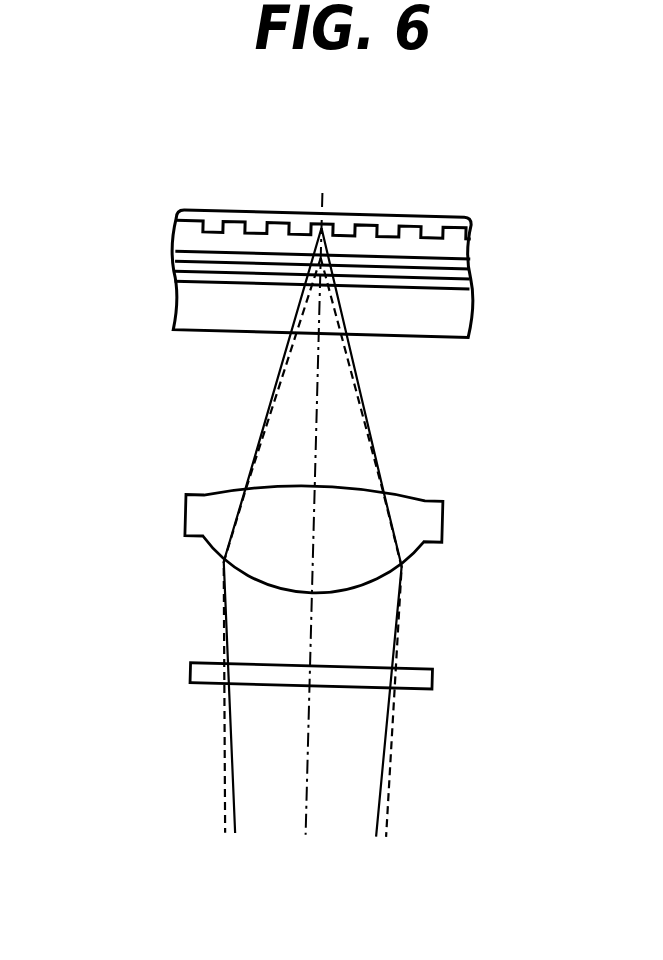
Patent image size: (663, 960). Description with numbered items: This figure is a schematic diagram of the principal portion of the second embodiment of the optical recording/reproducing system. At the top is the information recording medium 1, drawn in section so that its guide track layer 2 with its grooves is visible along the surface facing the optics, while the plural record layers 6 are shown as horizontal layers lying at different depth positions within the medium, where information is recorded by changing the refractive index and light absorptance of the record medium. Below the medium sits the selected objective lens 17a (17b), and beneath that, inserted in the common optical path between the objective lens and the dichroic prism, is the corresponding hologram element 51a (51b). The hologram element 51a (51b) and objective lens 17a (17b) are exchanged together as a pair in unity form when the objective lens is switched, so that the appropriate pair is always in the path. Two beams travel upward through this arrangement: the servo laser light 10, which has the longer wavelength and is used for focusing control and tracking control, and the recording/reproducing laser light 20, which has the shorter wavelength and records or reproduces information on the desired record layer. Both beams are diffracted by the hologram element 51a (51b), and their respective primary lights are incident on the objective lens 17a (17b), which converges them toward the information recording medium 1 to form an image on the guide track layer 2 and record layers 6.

The information recording medium 1 is at (366, 207).
The guide track layer 2 is at (238, 210).
The record layers 6 is at (422, 262).
The objective lens 17a is at (240, 513).
The objective lens 17b is at (207, 513).
The hologram element 51a is at (231, 629).
The hologram element 51b is at (205, 673).
The servo laser light 10 is at (233, 793).
The recording/reproducing laser light 20 is at (227, 730).